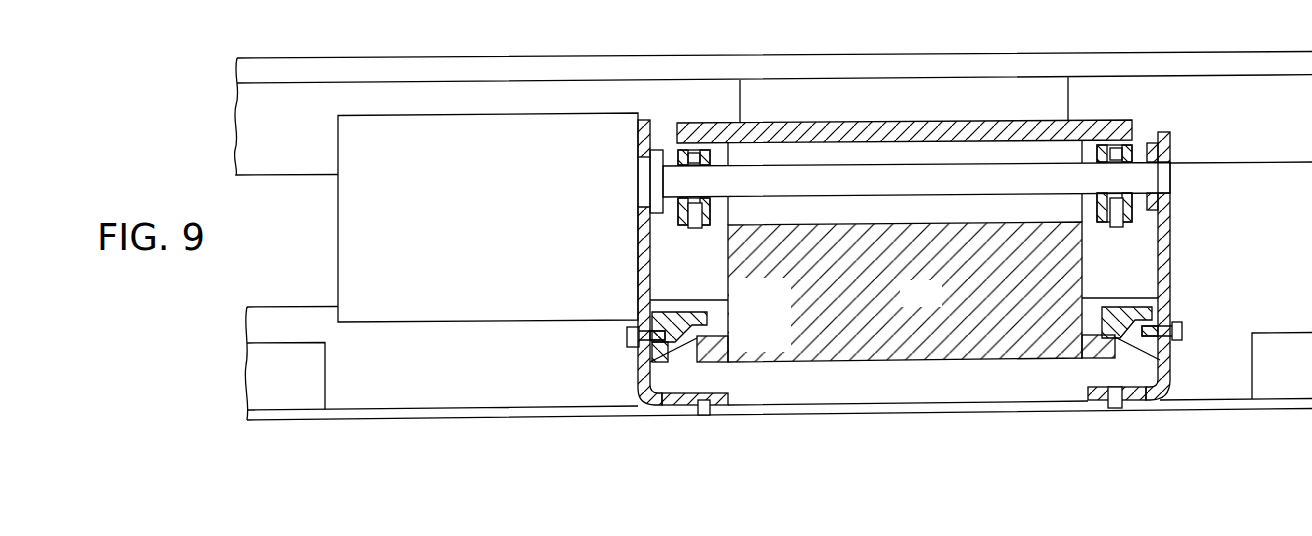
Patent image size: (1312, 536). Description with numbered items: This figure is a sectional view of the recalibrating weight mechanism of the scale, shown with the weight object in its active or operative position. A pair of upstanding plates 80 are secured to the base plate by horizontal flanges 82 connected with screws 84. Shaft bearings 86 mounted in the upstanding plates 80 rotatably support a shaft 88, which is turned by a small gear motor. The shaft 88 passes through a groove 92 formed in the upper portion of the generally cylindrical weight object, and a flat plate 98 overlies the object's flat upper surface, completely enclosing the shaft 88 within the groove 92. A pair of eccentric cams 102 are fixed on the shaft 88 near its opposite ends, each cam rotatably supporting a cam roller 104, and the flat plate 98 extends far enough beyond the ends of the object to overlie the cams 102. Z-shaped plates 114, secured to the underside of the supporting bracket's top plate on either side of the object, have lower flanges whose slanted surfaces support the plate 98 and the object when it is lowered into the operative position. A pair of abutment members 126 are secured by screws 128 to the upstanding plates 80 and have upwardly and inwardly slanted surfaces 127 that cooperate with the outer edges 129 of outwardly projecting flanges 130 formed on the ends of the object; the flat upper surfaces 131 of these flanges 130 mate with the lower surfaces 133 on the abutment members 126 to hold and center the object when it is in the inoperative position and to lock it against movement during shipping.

The upstanding plate 80 is at (643, 283).
The horizontal flange 82 is at (725, 396).
The screw 84 is at (708, 393).
The shaft bearing 86 is at (655, 148).
The shaft 88 is at (963, 190).
The groove 92 is at (936, 304).
The flat plate 98 is at (1117, 120).
The eccentric cam 102 is at (678, 222).
The cam roller 104 is at (692, 228).
The Z-shaped plate 114 is at (1070, 94).
The abutment member 126 is at (658, 352).
The slanted surface 127 is at (727, 345).
The screw 128 is at (627, 333).
The outer edge 129 is at (732, 304).
The outwardly projecting flange 130 is at (715, 362).
The flat upper surface 131 is at (700, 337).
The lower surface 133 is at (705, 322).